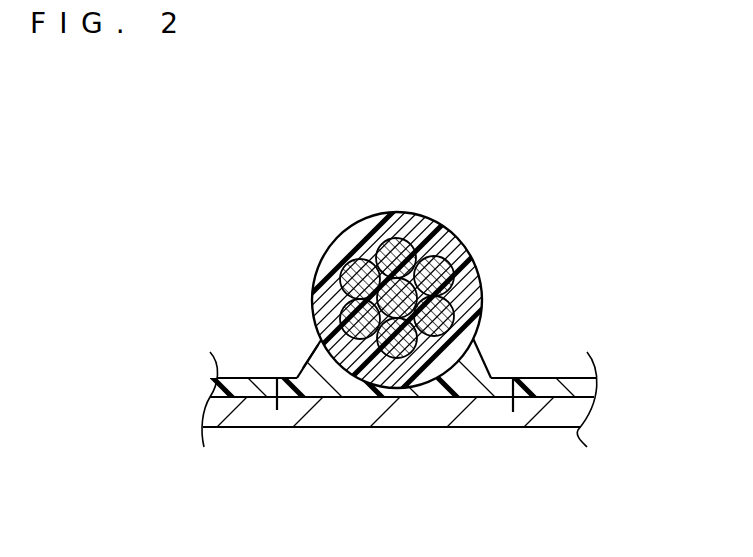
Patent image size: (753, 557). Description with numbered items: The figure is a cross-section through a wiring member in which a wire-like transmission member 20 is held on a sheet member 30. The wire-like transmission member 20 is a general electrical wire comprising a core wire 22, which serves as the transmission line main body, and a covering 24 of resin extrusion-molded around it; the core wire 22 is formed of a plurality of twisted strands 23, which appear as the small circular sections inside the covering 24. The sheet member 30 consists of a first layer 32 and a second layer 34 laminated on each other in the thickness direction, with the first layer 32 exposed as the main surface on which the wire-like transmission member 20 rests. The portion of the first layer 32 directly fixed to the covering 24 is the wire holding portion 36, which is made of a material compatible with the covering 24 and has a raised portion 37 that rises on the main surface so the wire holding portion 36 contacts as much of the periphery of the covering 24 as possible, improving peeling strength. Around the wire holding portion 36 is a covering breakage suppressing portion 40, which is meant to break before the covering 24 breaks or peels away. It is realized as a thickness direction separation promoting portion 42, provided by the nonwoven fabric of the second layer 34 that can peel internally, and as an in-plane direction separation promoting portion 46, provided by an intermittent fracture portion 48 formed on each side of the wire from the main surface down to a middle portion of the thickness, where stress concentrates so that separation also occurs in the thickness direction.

The wire-like transmission member 20 is at (398, 248).
The core wire 22 is at (403, 247).
The strand 23 is at (467, 171).
The covering 24 is at (386, 229).
The sheet member 30 is at (422, 383).
The first layer 32 is at (582, 386).
The second layer 34 is at (568, 413).
The wire holding portion 36 is at (401, 334).
The raised portion 37 is at (311, 352).
The covering breakage suppressing portion 40 is at (381, 448).
The thickness direction separation promoting portion 42 is at (395, 438).
The in-plane direction separation promoting portion 46 is at (384, 429).
The intermittent fracture portion 48 is at (278, 411).